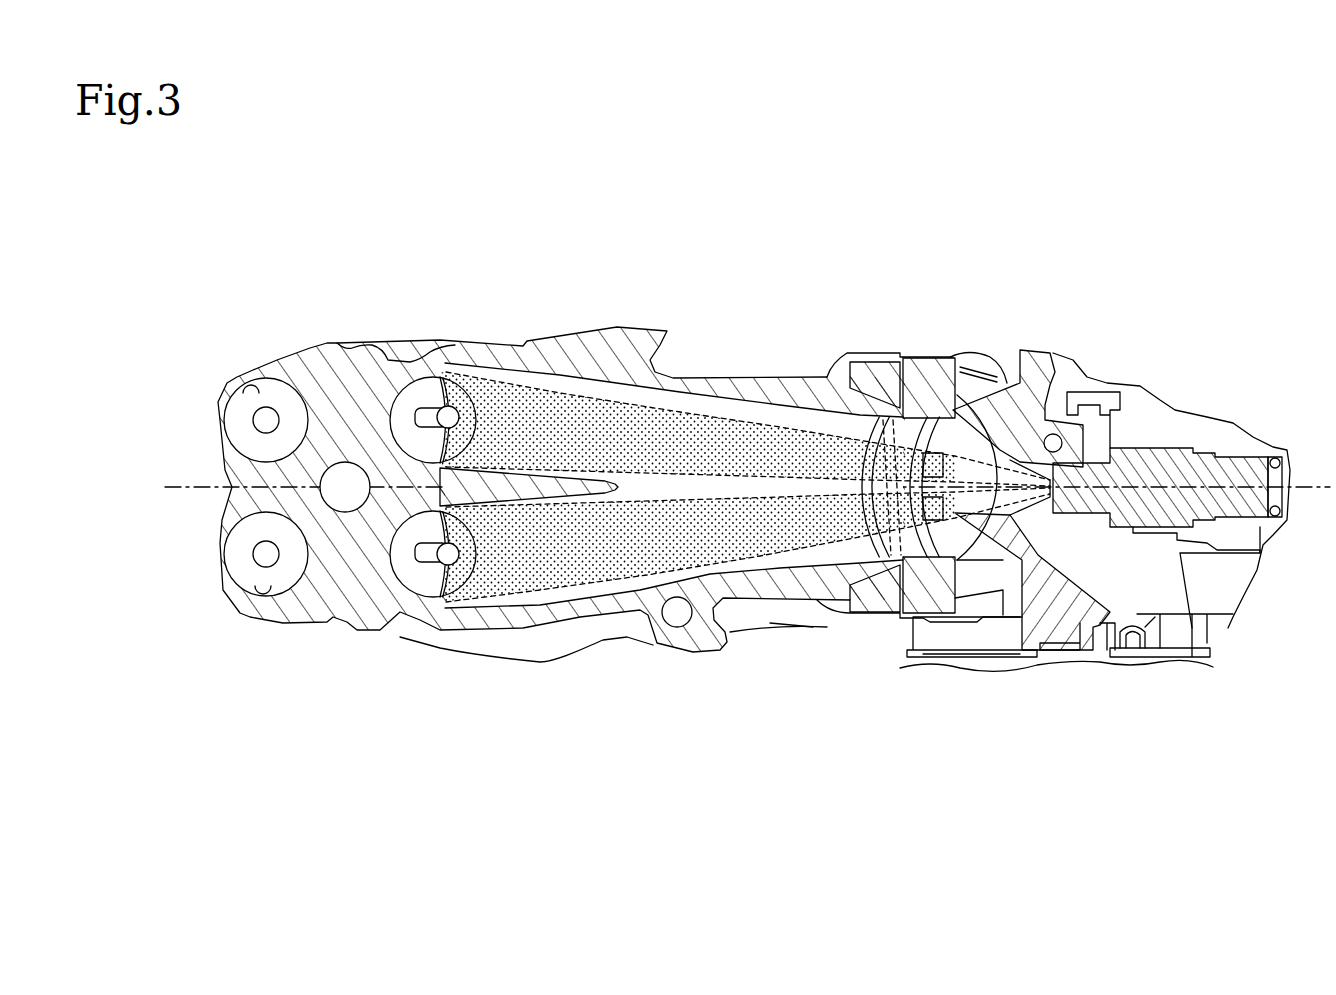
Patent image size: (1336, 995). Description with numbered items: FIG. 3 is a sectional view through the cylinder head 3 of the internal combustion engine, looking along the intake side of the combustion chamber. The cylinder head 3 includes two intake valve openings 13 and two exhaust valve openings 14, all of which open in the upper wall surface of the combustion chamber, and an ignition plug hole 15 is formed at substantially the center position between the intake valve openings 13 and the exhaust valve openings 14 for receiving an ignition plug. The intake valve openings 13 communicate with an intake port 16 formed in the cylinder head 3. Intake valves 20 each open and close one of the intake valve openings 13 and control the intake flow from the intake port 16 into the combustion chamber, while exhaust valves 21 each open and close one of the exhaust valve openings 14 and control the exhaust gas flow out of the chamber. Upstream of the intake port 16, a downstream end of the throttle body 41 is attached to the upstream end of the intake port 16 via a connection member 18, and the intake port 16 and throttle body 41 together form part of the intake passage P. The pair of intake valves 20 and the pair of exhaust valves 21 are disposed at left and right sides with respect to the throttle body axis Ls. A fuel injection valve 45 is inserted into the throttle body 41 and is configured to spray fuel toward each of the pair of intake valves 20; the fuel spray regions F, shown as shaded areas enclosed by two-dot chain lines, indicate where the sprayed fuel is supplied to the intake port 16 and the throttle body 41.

The cylinder head 3 is at (742, 376).
The intake valve openings 13 is at (421, 378).
The exhaust valve openings 14 is at (252, 392).
The ignition plug hole 15 is at (346, 478).
The intake port 16 is at (818, 398).
The connection member 18 is at (933, 368).
The intake valves 20 is at (687, 493).
The exhaust valves 21 is at (243, 430).
The throttle body 41 is at (1030, 357).
The fuel injection valve 45 is at (1153, 463).
The fuel spray regions F is at (593, 422).
The intake passage P is at (976, 539).
The throttle body axis Ls is at (729, 489).